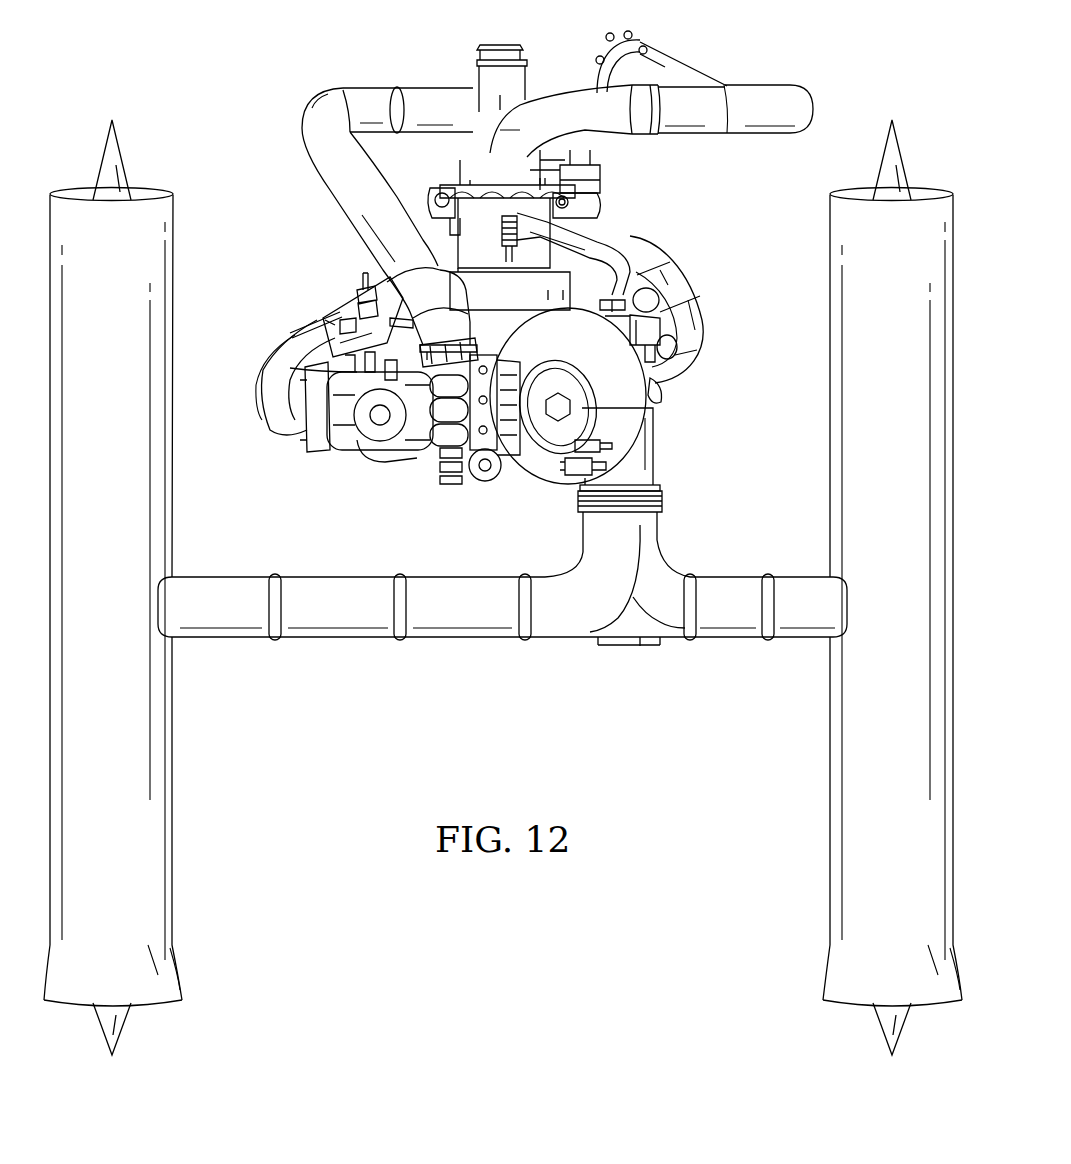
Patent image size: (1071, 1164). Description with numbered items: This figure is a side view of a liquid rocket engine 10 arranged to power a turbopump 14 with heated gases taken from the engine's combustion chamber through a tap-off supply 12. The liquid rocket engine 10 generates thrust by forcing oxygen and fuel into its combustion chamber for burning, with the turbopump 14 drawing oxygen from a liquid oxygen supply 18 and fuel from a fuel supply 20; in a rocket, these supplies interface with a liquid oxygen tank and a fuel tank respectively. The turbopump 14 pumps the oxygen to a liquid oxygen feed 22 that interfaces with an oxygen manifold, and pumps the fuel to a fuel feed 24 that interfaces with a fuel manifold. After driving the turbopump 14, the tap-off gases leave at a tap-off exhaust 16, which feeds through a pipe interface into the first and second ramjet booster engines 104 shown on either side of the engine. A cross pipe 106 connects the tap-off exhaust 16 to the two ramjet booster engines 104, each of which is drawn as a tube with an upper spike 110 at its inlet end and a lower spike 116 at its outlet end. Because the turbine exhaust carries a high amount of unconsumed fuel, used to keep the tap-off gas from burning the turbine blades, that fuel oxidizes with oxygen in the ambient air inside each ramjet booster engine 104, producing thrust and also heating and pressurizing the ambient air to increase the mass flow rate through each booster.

The liquid rocket engine 10 is at (216, 103).
The tap-off supply 12 is at (374, 266).
The turbopump 14 is at (347, 450).
The tap-off exhaust 16 is at (655, 438).
The liquid oxygen supply 18 is at (426, 88).
The fuel supply 20 is at (770, 137).
The liquid oxygen feed 22 is at (592, 172).
The fuel feed 24 is at (606, 232).
The ramjet booster engine 104 is at (214, 826).
The cross pipe 106 is at (228, 576).
The upper spike 110 is at (83, 190).
The lower spike 116 is at (82, 1006).